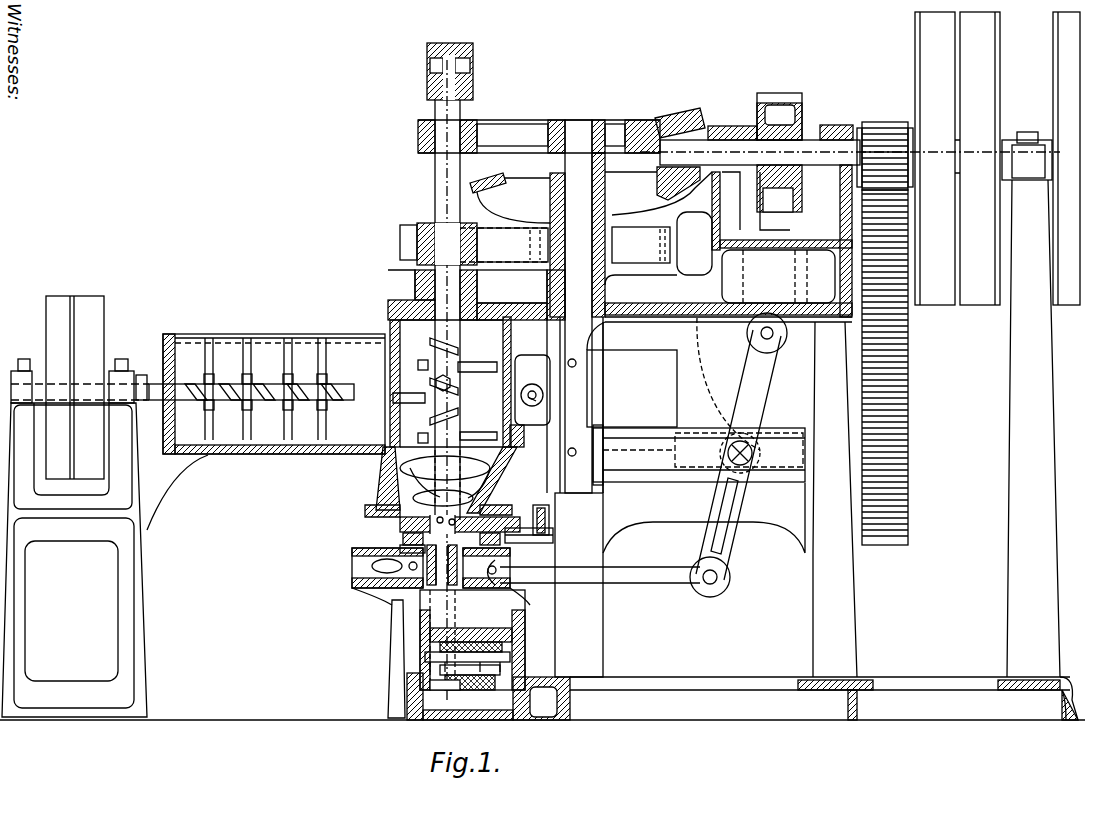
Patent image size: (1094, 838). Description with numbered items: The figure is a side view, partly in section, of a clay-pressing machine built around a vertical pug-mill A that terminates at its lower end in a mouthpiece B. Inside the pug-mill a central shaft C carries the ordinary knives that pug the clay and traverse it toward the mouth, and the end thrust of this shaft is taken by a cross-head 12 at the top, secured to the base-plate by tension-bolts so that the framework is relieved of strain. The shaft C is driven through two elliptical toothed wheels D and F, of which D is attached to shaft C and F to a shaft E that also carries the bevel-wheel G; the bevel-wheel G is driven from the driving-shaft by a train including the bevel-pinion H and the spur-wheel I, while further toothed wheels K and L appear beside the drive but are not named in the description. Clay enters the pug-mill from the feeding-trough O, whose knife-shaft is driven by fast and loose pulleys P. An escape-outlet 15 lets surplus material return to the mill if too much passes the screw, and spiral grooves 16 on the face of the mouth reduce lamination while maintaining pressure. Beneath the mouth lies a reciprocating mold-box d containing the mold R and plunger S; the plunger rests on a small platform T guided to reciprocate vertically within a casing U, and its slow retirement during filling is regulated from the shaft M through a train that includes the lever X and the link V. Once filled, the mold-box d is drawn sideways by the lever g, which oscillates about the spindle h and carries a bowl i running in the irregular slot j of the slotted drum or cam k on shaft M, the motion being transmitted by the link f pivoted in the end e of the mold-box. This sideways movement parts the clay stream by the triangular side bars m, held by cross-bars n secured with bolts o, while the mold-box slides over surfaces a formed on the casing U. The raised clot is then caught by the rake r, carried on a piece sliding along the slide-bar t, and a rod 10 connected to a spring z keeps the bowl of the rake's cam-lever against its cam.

The cross-head 12 is at (473, 62).
The central shaft C is at (447, 380).
The shaft E is at (576, 306).
The elliptical toothed wheel D is at (475, 219).
The pug-mill A is at (457, 382).
The spring z is at (532, 384).
The rod 10 is at (524, 410).
The escape-outlet 15 is at (390, 472).
The spiral grooves 16 is at (490, 460).
The mouthpiece B is at (400, 526).
The cross-bars n is at (405, 538).
The triangular side bars m is at (400, 545).
The bolts o is at (436, 525).
The surfaces a is at (454, 527).
The slide-bar t is at (535, 518).
The rake r is at (518, 541).
The mold R is at (442, 565).
The mold-box d is at (365, 576).
The end of mold-box e is at (522, 597).
The link f is at (620, 582).
The plunger S is at (472, 640).
The platform T is at (512, 635).
The casing U is at (512, 647).
The link V is at (450, 667).
The lever X is at (450, 697).
The shaft M is at (632, 374).
The spindle h is at (752, 455).
The bowl i is at (748, 333).
The lever g is at (725, 538).
The bevel-wheel G is at (658, 191).
The elliptical toothed wheel F is at (641, 245).
The slotted drum or cam k is at (658, 248).
The irregular slot j is at (778, 237).
The bevel-pinion H is at (672, 118).
The spur-wheel I is at (778, 110).
The gear K is at (886, 140).
The gear L is at (905, 340).
The fast and loose pulleys P is at (75, 387).
The feeding-trough O is at (267, 394).